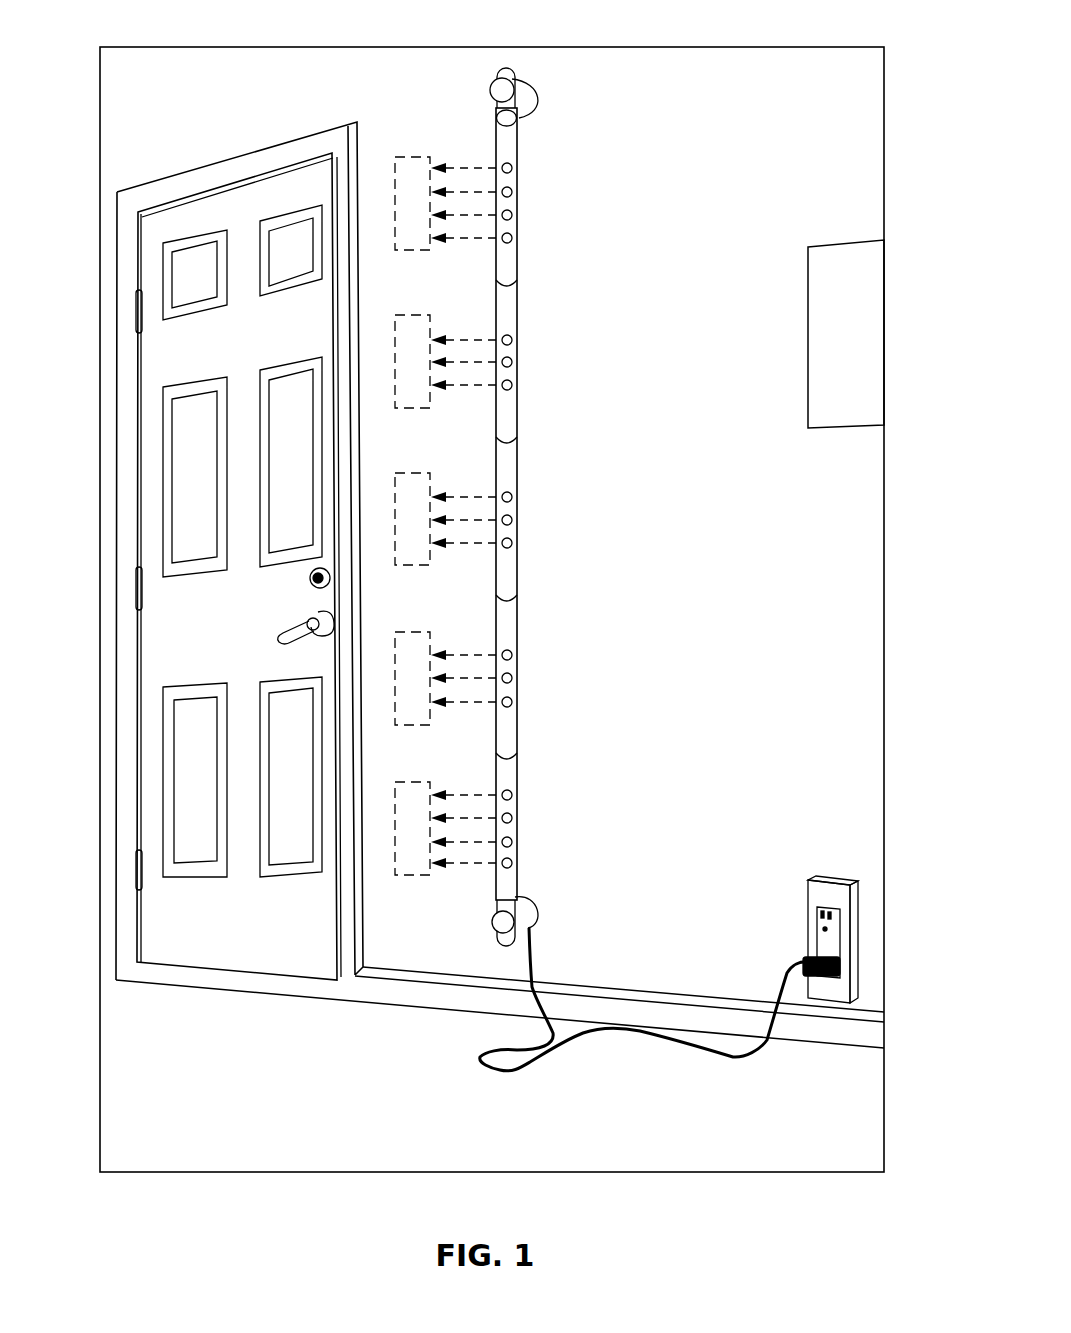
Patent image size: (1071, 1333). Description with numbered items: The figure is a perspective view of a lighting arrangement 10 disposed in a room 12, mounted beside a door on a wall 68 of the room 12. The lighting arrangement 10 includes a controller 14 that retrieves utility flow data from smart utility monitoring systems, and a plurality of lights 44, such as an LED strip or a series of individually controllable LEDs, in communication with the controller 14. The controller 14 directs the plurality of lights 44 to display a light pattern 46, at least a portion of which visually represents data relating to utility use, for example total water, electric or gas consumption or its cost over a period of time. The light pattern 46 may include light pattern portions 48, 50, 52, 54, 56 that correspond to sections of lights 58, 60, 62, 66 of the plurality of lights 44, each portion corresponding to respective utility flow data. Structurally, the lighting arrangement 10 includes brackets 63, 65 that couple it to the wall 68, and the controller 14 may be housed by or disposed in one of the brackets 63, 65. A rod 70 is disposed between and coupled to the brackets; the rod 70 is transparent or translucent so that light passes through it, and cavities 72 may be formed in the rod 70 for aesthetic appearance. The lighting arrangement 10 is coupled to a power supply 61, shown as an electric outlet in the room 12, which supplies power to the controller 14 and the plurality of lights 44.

The lighting arrangement 10 is at (630, 173).
The room 12 is at (140, 100).
The controller 14 is at (556, 1000).
The plurality of lights 44 is at (538, 230).
The light pattern 46 is at (372, 210).
The light pattern portion 48 is at (418, 781).
The light pattern portion 50 is at (418, 631).
The light pattern portion 52 is at (418, 472).
The light pattern portion 54 is at (418, 314).
The light pattern portion 56 is at (417, 156).
The section of lights 58 is at (513, 840).
The section of lights 60 is at (513, 654).
The power supply 61 is at (818, 972).
The section of lights 62 is at (513, 339).
The bracket 63 is at (491, 923).
The bracket 65 is at (518, 97).
The section of lights 66 is at (513, 215).
The wall 68 is at (766, 92).
The rod 70 is at (511, 607).
The cavities 72 is at (512, 266).